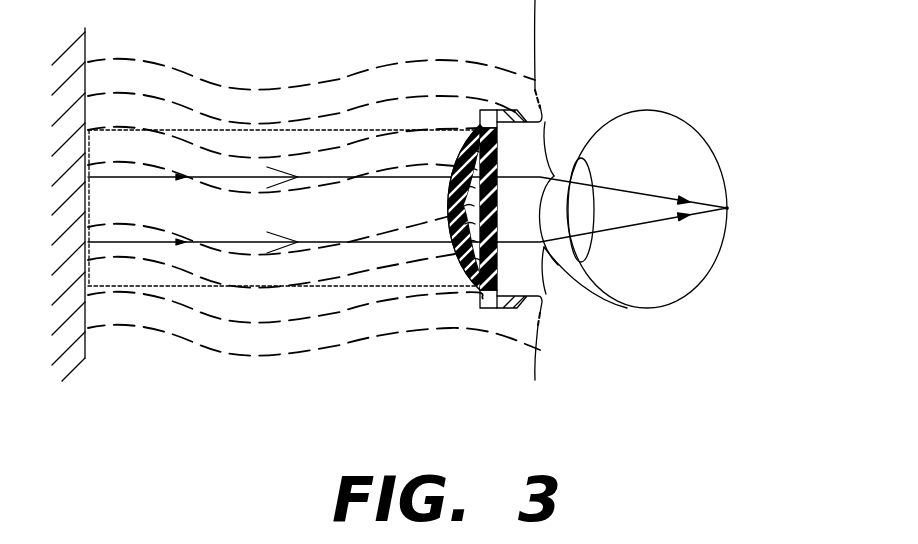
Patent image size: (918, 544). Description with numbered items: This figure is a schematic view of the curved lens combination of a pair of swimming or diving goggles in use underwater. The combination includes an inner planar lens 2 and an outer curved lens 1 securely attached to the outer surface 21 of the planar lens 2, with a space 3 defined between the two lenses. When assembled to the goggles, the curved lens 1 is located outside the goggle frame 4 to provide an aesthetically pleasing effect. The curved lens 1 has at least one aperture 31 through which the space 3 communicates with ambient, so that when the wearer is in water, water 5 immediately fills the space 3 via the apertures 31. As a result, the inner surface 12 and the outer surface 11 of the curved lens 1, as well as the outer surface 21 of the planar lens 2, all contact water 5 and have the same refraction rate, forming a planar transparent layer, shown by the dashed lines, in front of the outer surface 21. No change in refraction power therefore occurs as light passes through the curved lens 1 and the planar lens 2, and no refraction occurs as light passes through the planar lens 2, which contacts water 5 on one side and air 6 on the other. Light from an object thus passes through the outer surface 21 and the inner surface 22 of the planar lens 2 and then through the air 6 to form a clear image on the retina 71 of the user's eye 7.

The outer curved lens 1 is at (488, 224).
The outer surface of the curved lens 11 is at (450, 212).
The inner surface of the curved lens 12 is at (478, 128).
The space 3 is at (518, 224).
The aperture 31 is at (481, 108).
The goggle frame 4 is at (500, 280).
The water 5 is at (325, 267).
The inner planar lens 2 is at (608, 222).
The outer surface of the planar lens 21 is at (497, 146).
The inner surface of the planar lens 22 is at (627, 308).
The air 6 is at (669, 188).
The user's eye 7 is at (687, 168).
The retina 71 is at (727, 208).